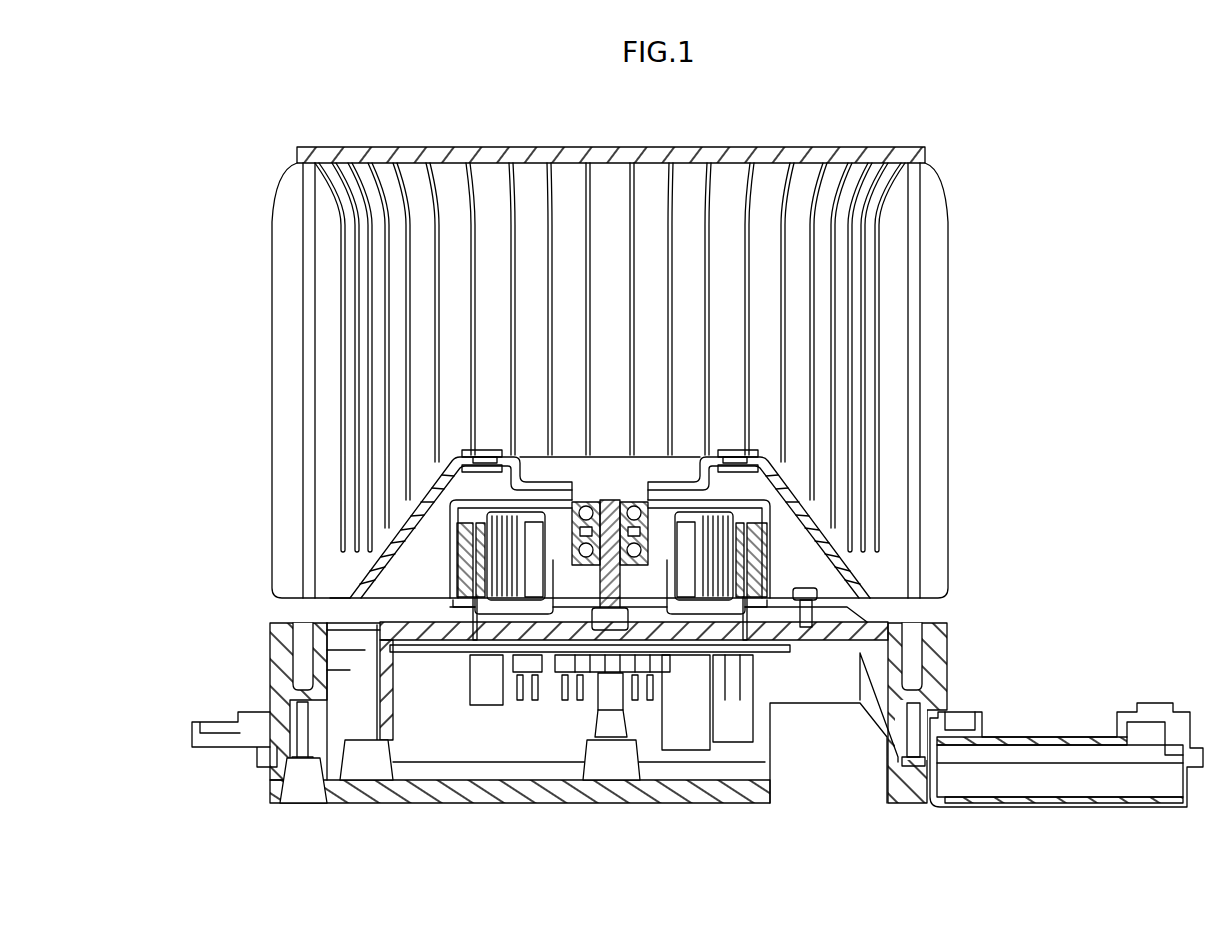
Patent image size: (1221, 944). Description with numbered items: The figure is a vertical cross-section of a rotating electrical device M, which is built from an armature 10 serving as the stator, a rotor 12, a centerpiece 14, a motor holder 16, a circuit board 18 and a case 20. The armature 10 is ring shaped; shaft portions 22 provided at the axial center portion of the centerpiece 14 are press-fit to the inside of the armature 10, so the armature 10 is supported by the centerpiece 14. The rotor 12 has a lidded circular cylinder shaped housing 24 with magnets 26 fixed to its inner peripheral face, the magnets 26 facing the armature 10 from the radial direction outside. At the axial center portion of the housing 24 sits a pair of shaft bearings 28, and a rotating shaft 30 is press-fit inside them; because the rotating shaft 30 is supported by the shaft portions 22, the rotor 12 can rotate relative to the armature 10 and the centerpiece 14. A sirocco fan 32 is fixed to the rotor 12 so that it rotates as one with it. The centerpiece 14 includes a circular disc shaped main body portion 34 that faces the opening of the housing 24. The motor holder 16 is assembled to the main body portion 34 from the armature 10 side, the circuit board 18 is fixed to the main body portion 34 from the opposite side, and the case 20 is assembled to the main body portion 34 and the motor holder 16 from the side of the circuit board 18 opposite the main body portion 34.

The rotating electrical device M is at (838, 126).
The armature 10 is at (747, 502).
The rotor 12 is at (777, 562).
The centerpiece 14 is at (690, 648).
The motor holder 16 is at (340, 623).
The circuit board 18 is at (490, 655).
The case 20 is at (400, 803).
The shaft portions 22 is at (547, 580).
The housing 24 is at (737, 517).
The magnets 26 is at (768, 570).
The shaft bearings 28 is at (575, 500).
The rotating shaft 30 is at (600, 502).
The sirocco fan 32 is at (272, 263).
The main body portion 34 is at (737, 642).